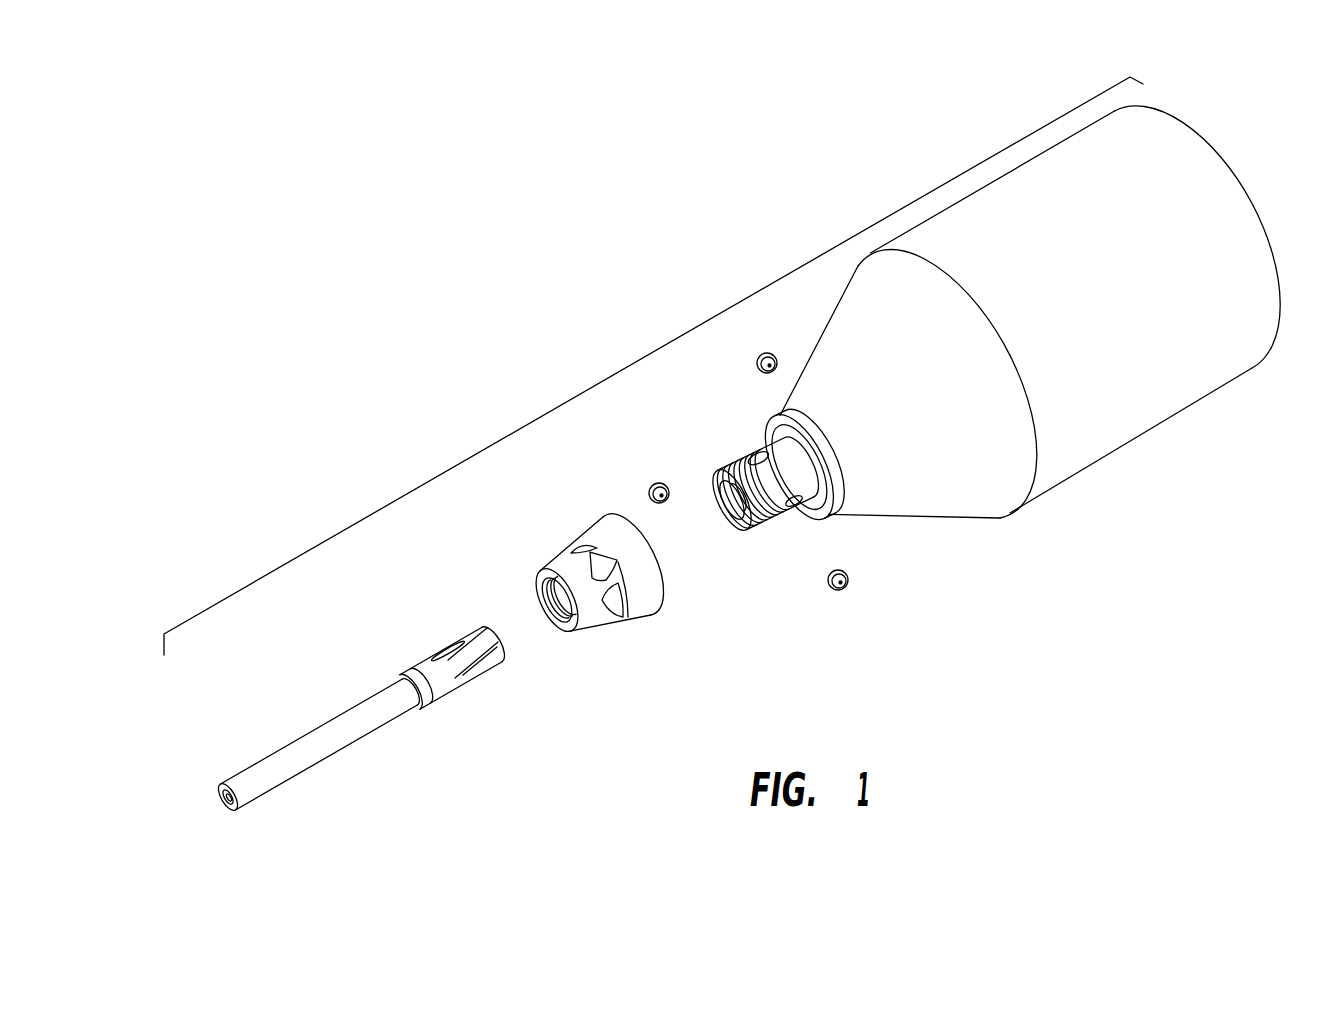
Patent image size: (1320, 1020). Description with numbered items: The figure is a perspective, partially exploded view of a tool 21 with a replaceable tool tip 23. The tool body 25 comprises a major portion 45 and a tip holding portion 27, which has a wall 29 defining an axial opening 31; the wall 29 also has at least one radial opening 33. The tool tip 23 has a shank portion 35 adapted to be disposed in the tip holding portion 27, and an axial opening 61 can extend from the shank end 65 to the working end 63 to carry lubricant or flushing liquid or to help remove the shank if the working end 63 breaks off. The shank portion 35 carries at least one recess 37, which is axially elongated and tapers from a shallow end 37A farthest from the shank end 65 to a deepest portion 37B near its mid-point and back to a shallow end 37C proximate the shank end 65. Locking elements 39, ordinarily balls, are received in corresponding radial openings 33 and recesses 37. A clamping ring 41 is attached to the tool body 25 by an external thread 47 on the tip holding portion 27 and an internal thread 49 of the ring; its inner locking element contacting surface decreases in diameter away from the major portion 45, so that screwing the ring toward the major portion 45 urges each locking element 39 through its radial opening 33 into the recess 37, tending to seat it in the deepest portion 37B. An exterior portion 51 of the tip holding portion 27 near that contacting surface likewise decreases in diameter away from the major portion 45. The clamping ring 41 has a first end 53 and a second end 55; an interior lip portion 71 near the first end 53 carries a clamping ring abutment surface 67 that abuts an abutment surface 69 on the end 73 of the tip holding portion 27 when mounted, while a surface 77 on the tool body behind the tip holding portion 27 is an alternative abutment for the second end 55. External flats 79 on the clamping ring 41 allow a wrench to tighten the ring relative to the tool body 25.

The tool 21 is at (651, 352).
The tool tip 23 is at (352, 718).
The tool body 25 is at (1030, 312).
The tip holding portion 27 is at (783, 490).
The wall 29 is at (733, 473).
The axial opening 31 is at (731, 509).
The radial opening 33 is at (757, 447).
The shank portion 35 is at (451, 697).
The recess 37 is at (455, 676).
The shallow end of recess 37A is at (431, 660).
The deepest portion of recess 37B is at (441, 636).
The shallow end of recess 37C is at (495, 673).
The locking element 39 is at (766, 352).
The clamping ring 41 is at (603, 580).
The major portion of tool body 45 is at (1203, 386).
The external thread 47 is at (796, 529).
The internal thread 49 is at (543, 604).
The exterior portion of tip holding portion 51 is at (799, 484).
The first end of clamping ring 53 is at (566, 632).
The second end of clamping ring 55 is at (618, 515).
The axial opening of shank 61 is at (226, 800).
The working end 63 is at (252, 761).
The shank end 65 is at (492, 628).
The clamping ring abutment surface 67 is at (574, 566).
The abutment surface of tip holding portion 69 is at (718, 510).
The interior lip portion 71 is at (543, 625).
The end of tip holding portion 73 is at (716, 485).
The surface on tool body 77 is at (788, 416).
The external flats 79 is at (633, 606).